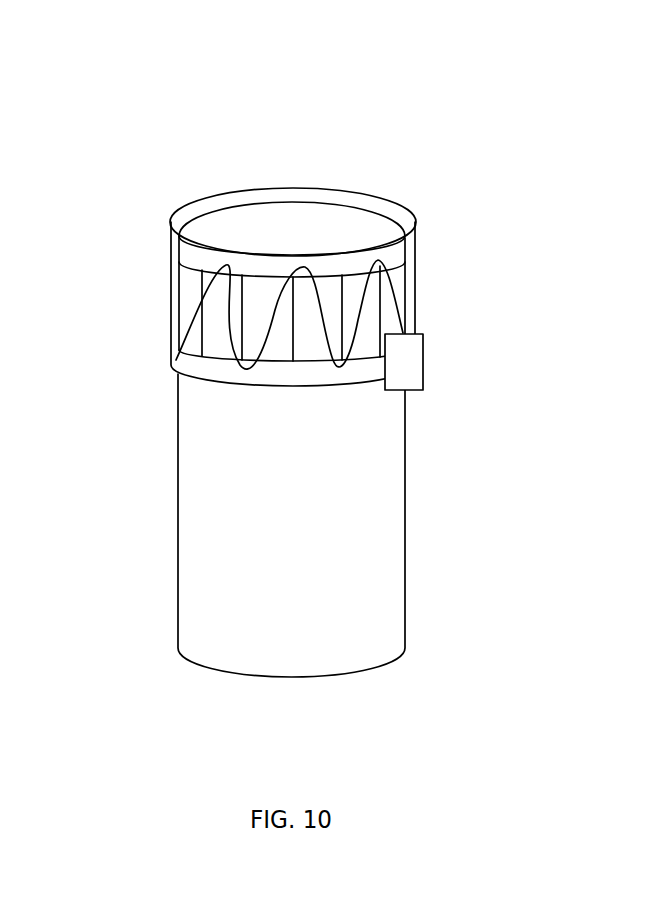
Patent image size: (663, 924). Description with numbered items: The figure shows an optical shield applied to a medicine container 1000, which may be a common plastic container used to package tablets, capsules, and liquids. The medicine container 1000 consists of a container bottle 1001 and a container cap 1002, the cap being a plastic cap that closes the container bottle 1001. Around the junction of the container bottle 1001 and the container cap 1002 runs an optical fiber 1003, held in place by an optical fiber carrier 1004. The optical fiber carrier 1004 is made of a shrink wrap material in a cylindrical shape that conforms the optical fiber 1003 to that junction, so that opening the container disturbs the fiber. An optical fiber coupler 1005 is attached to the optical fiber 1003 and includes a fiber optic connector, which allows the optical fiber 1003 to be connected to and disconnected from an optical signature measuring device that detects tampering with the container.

The medicine container 1000 is at (292, 344).
The container bottle 1001 is at (177, 427).
The container cap 1002 is at (190, 223).
The optical fiber 1003 is at (398, 296).
The optical fiber carrier 1004 is at (365, 197).
The optical fiber coupler 1005 is at (423, 372).